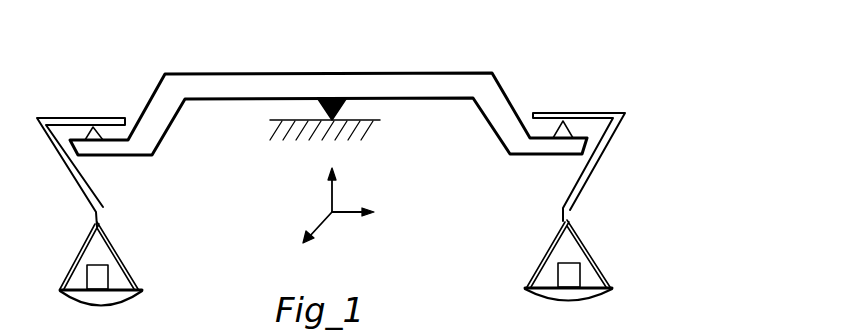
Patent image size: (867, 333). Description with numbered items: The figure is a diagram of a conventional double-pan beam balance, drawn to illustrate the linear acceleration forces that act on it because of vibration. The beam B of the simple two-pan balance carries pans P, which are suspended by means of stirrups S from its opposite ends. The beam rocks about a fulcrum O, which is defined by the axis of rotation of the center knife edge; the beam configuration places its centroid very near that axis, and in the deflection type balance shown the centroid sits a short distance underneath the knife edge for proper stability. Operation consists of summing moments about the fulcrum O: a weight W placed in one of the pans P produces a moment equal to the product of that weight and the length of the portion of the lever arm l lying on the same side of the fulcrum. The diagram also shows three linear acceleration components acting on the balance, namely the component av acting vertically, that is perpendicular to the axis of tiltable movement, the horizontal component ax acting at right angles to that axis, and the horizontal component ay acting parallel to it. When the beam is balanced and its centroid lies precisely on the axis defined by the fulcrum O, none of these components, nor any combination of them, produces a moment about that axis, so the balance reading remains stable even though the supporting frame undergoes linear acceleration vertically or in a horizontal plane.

The lever arm l is at (330, 95).
The beam B is at (408, 72).
The fulcrum O is at (346, 119).
The stirrups S is at (105, 212).
The weight W is at (105, 273).
The pans P is at (62, 302).
The vertical linear acceleration component av is at (333, 193).
The horizontal linear acceleration component at right angles to the axis ax is at (346, 213).
The horizontal linear acceleration component parallel to the axis ay is at (322, 218).